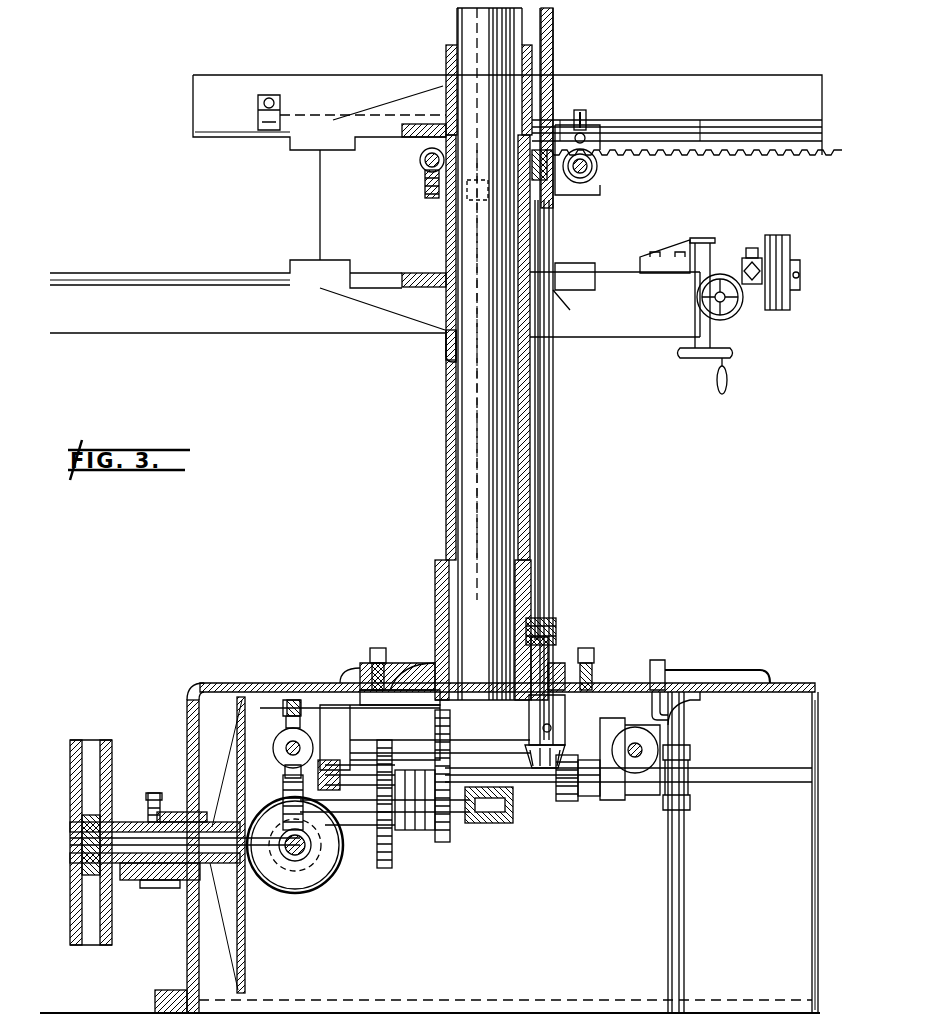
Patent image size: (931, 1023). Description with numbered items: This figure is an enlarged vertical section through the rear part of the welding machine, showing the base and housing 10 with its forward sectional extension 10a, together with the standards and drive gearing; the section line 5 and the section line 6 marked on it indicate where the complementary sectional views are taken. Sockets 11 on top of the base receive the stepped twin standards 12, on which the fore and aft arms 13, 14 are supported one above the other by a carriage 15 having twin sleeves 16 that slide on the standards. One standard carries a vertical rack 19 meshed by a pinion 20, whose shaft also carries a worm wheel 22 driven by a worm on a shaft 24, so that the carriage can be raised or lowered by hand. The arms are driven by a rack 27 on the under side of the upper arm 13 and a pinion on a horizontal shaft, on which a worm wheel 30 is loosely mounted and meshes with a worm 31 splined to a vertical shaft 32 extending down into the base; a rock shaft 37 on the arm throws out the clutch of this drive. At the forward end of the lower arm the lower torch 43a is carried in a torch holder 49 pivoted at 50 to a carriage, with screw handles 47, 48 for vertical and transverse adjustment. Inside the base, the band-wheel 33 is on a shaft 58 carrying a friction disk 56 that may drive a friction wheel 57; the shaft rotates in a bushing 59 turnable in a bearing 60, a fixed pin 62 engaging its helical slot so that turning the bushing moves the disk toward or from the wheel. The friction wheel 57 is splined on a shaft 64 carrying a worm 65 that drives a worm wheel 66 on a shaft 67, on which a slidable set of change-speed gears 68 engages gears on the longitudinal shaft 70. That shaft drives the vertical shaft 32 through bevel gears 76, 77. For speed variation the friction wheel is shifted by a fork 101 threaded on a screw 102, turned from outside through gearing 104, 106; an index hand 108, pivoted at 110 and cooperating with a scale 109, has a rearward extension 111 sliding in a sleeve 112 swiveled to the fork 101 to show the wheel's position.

The section line 5- 5 is at (420, 166).
The section line 6- 6 is at (580, 130).
The base and housing 10 is at (210, 685).
The forward sectional extension 10a is at (770, 855).
The socket 11 is at (445, 562).
The twin standard 12 is at (455, 478).
The upper arm 13 is at (507, 115).
The lower arm 14 is at (375, 298).
The carriage 15 is at (320, 212).
The twin sleeve 16 is at (443, 358).
The vertical rack 19 is at (480, 423).
The pinion 20 is at (476, 196).
The worm wheel 22 is at (428, 190).
The shaft 24 is at (424, 170).
The rack 27 is at (742, 156).
The worm wheel 30 is at (597, 178).
The worm 31 is at (565, 185).
The vertical shaft 32 is at (552, 252).
The band-wheel 33 is at (100, 745).
The rock shaft 37 is at (770, 118).
The lower torch 43a is at (783, 312).
The screw operating handle 47 is at (700, 360).
The screw operating handle 48 is at (728, 313).
The torch holder 49 is at (787, 262).
The pivot 50 is at (753, 256).
The friction disk 56 is at (246, 952).
The friction wheel 57 is at (322, 876).
The shaft 58 is at (170, 863).
The bushing 59 is at (190, 866).
The bearing 60 is at (165, 810).
The fixed pin 62 is at (152, 805).
The shaft 64 is at (285, 866).
The worm 65 is at (320, 850).
The worm wheel 66 is at (283, 790).
The shaft 67 is at (362, 812).
The change-speed gears 68 is at (432, 822).
The longitudinal shaft 70 is at (463, 814).
The bevel gear 76 is at (560, 802).
The bevel gear 77 is at (545, 770).
The fork 101 is at (282, 768).
The screw 102 is at (290, 748).
The shaft and gearing 104 is at (645, 752).
The shaft and gearing 106 is at (505, 735).
The index hand 108 is at (712, 678).
The scale 109 is at (755, 686).
The pivot 110 is at (650, 688).
The rearward extension 111 is at (393, 700).
The sleeve 112 is at (300, 705).